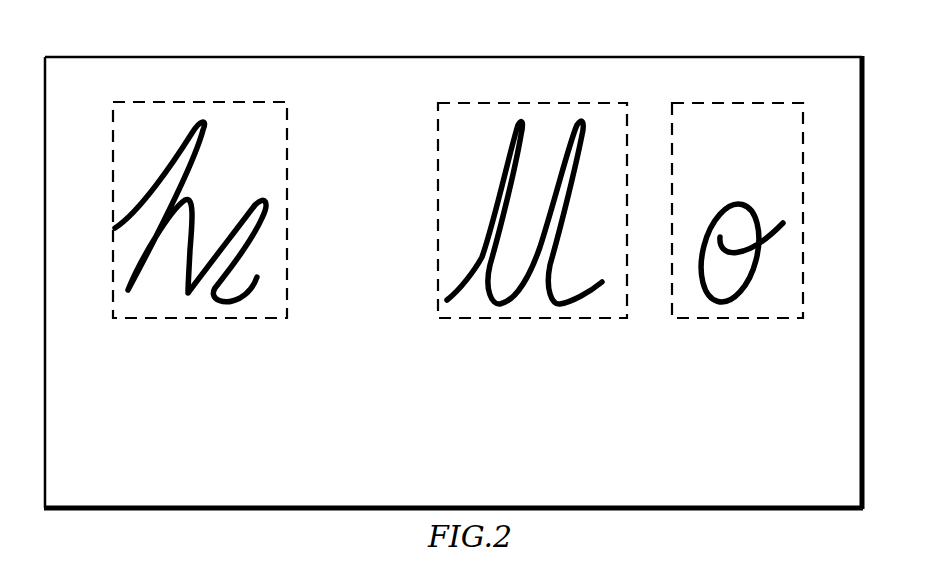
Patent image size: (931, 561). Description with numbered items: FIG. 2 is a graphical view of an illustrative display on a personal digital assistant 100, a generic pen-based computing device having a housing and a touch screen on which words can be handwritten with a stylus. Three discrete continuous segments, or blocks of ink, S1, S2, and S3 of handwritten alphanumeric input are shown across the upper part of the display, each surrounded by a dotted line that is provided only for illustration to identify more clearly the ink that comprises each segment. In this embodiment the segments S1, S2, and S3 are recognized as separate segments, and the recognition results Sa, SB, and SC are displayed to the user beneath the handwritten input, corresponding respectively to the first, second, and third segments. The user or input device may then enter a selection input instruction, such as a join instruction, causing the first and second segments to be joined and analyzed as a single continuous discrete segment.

The personal digital assistant 100 is at (498, 57).
The first discrete continuous segment S1 is at (287, 172).
The second discrete continuous segment S2 is at (438, 223).
The third discrete continuous segment S3 is at (680, 315).
The recognition result for first segment Sa is at (178, 413).
The recognition result for second segment SB is at (503, 405).
The recognition result for third segment SC is at (715, 407).